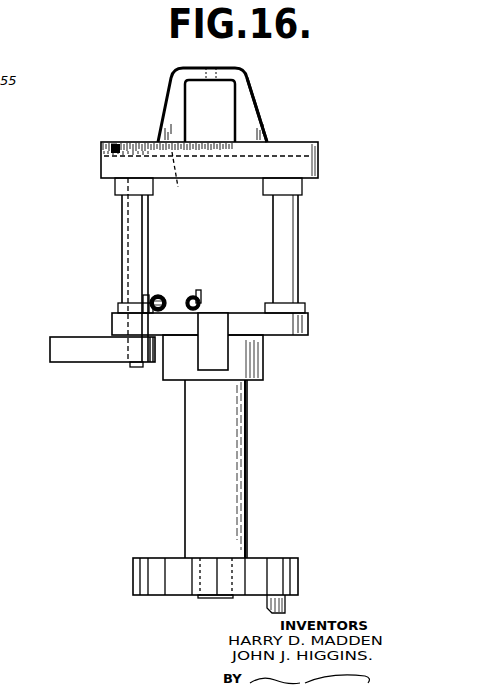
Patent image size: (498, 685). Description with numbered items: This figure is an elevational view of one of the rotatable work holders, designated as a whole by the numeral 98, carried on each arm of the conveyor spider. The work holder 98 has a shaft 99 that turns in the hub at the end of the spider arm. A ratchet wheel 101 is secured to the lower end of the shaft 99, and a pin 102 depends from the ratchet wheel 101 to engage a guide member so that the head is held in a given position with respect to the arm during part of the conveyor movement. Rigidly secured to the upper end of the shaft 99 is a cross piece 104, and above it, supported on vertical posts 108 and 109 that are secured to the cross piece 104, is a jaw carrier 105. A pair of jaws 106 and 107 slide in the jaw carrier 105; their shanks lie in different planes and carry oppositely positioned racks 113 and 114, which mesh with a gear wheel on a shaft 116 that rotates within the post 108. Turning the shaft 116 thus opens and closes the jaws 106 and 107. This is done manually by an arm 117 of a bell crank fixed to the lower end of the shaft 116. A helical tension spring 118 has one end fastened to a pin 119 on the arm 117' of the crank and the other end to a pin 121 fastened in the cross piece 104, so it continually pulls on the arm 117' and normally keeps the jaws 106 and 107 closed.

The work holder 98 is at (302, 216).
The shaft 99 is at (248, 487).
The ratchet wheel 101 is at (282, 569).
The pin 102 is at (288, 607).
The cross piece 104 is at (281, 331).
The jaw carrier 105 is at (314, 171).
The jaw 106 is at (171, 93).
The jaw 107 is at (249, 91).
The vertical post 108 is at (122, 270).
The vertical post 109 is at (298, 277).
The rack 113 is at (188, 146).
The rack 114 is at (184, 178).
The shaft 116 is at (101, 156).
The arm of bell crank 117 is at (102, 362).
The arm of crank 117' is at (174, 349).
The spring 118 is at (160, 297).
The pin 119 is at (148, 320).
The pin 121 is at (203, 292).